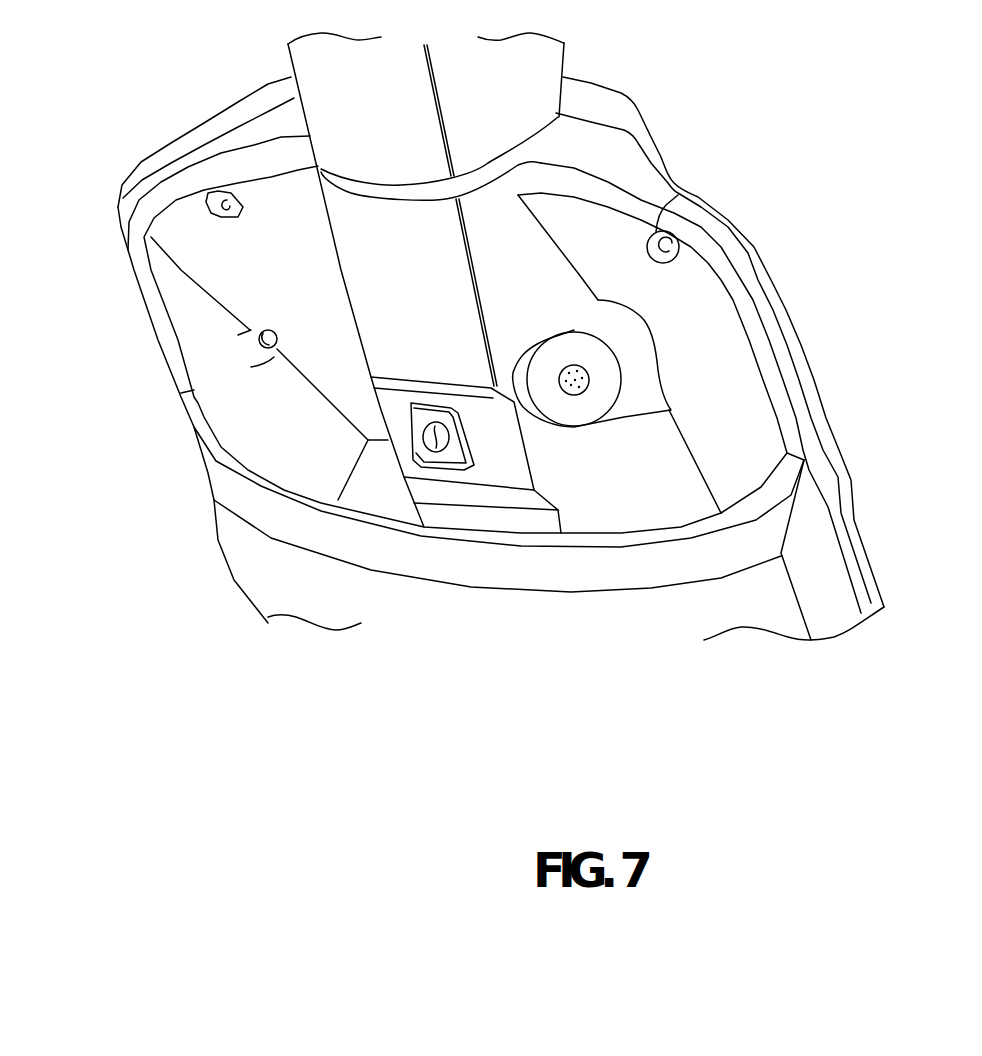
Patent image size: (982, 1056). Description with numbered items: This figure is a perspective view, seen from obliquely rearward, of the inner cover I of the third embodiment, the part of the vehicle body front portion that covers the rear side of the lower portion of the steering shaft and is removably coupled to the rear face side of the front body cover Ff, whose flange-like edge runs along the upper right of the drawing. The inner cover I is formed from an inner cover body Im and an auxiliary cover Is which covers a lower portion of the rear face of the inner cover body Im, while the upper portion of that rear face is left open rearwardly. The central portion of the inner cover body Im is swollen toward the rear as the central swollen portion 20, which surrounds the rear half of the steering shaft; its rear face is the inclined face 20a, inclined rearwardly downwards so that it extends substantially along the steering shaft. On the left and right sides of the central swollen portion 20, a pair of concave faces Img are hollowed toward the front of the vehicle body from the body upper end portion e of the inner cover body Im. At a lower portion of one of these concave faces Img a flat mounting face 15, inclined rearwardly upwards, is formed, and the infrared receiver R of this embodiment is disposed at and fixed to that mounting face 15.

The inner cover I is at (50, 371).
The inner cover body Im is at (198, 331).
The auxiliary cover Is is at (220, 537).
The front body cover Ff is at (653, 142).
The body upper end portion e is at (677, 195).
The central swollen portion 20 is at (332, 225).
The inclined face 20a is at (387, 317).
The concave faces Img is at (637, 348).
The mounting face 15 is at (560, 350).
The infrared receiver R is at (577, 387).